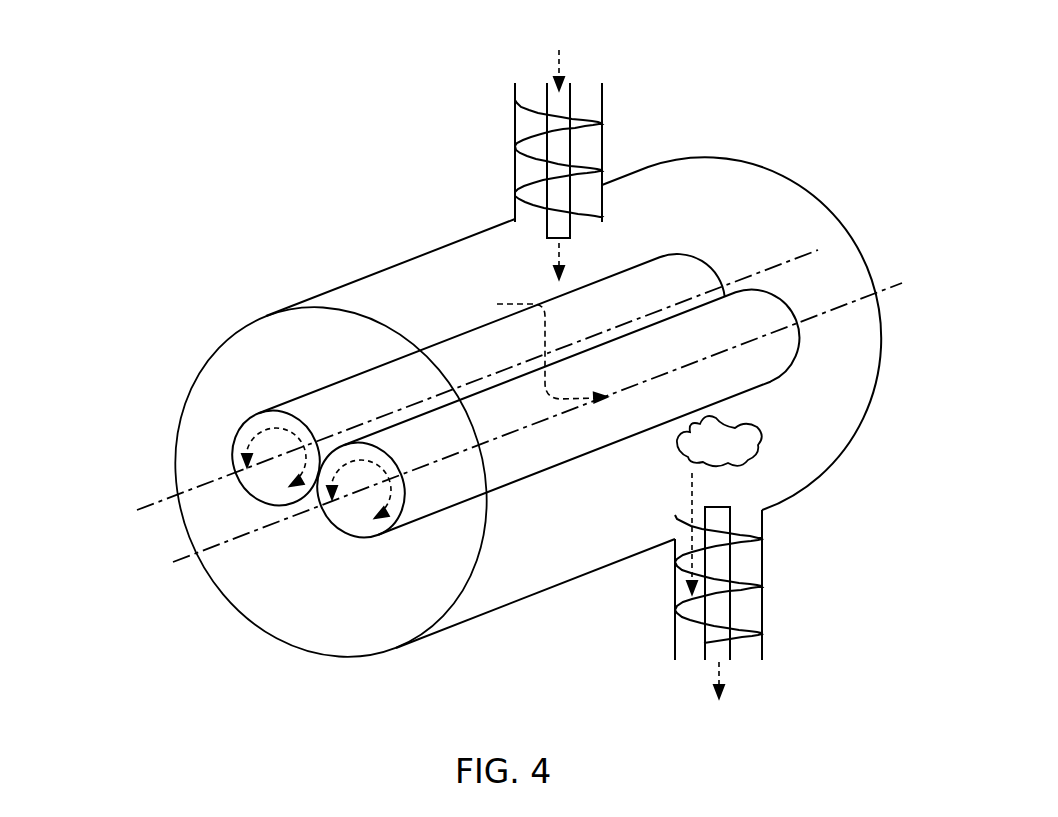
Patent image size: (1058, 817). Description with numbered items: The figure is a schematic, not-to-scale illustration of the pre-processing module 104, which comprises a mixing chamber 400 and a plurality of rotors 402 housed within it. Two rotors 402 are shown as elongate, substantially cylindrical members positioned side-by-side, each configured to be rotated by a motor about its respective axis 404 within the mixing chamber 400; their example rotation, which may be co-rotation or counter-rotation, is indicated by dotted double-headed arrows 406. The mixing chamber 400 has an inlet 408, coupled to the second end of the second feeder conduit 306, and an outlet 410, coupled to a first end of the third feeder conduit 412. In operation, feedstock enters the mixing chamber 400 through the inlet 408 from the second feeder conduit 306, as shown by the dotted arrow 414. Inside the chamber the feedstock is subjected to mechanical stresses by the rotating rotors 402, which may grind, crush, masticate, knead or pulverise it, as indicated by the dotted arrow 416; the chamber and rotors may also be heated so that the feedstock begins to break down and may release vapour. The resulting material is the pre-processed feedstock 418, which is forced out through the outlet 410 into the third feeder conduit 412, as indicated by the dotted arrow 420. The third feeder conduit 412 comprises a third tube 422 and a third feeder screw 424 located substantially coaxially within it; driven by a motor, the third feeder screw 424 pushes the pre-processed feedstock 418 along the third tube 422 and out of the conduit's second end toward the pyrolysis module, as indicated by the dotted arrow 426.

The pre-processing module 104 is at (276, 226).
The second feeder conduit 306 is at (617, 141).
The mixing chamber 400 is at (410, 262).
The rotors 402 is at (468, 333).
The axes 404 is at (160, 500).
The rotation of the rotors 406 is at (283, 413).
The inlet 408 is at (596, 249).
The outlet 410 is at (752, 504).
The third feeder conduit 412 is at (745, 577).
The introduction of feedstock 414 is at (557, 257).
The compounding or mixing of feedstock 416 is at (577, 388).
The pre-processed feedstock 418 is at (765, 430).
The transfer of pre-processed feedstock out of the mixing chamber 420 is at (690, 500).
The third tube 422 is at (675, 650).
The third feeder screw 424 is at (675, 612).
The transfer of pre-processed feedstock to the pyrolysis module 426 is at (725, 667).